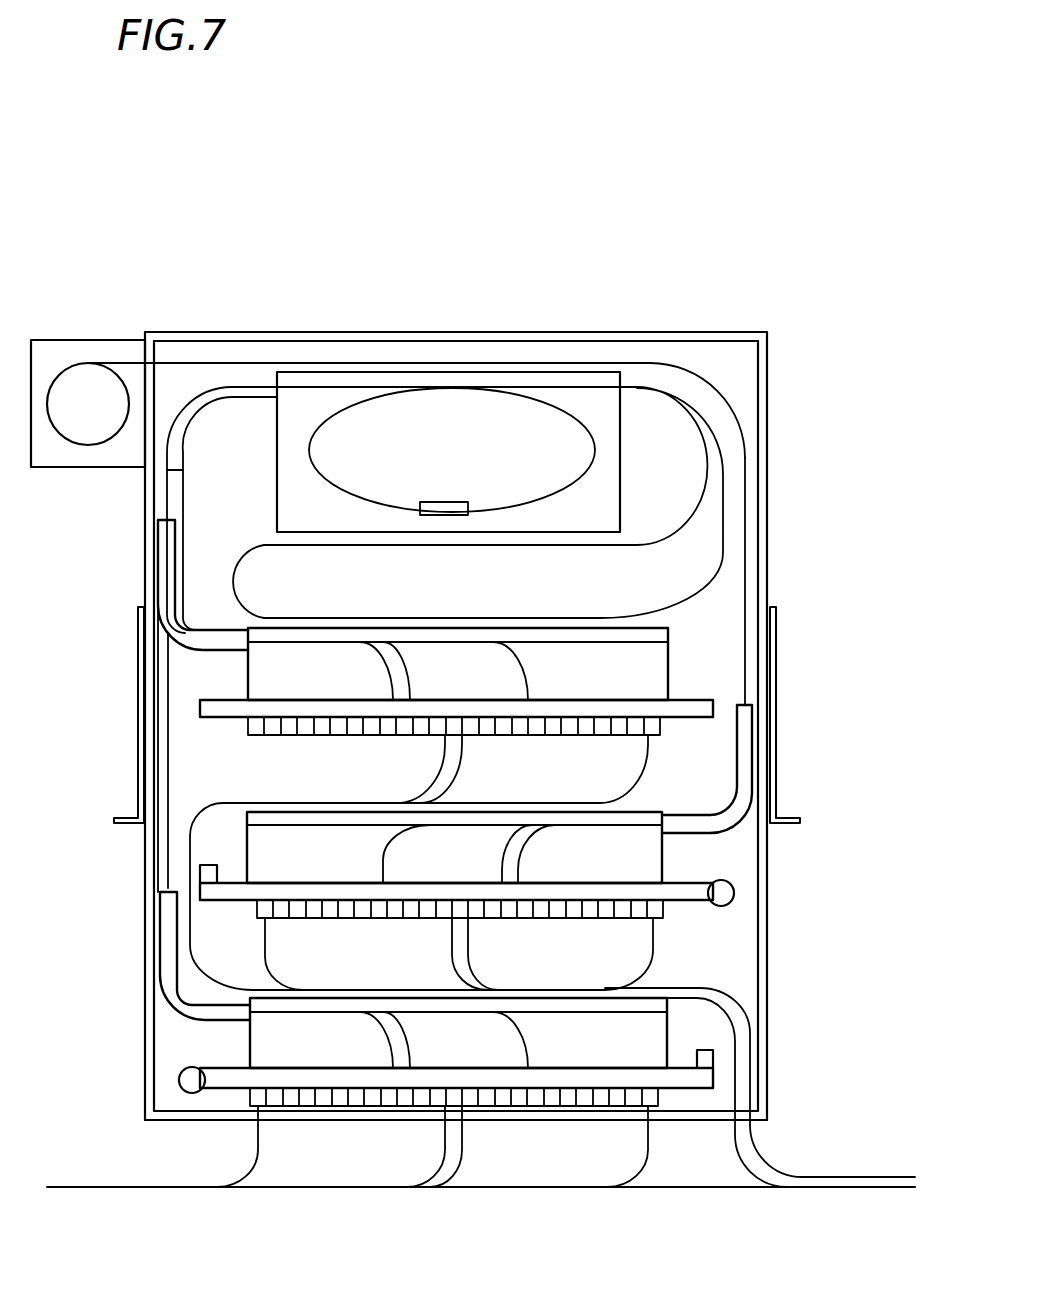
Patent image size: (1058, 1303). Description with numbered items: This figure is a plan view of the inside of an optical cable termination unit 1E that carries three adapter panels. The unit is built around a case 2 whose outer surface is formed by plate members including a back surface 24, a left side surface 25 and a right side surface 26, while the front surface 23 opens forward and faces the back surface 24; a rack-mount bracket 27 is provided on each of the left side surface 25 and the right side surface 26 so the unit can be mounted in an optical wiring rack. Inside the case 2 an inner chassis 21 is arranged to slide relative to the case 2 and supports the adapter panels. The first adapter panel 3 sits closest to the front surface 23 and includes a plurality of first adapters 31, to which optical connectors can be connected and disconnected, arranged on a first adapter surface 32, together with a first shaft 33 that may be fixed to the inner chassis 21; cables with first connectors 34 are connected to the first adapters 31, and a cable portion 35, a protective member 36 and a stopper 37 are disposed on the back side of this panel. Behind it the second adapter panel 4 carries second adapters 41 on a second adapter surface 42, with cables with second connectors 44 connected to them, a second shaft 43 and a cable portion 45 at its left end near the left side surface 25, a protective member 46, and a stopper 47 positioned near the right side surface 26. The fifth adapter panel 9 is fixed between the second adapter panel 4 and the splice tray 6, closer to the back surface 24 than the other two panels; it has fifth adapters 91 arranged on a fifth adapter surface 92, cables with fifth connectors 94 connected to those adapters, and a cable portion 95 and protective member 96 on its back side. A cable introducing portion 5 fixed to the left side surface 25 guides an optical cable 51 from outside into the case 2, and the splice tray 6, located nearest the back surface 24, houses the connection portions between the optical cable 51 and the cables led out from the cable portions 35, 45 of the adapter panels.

The termination unit 1E is at (798, 282).
The case 2 is at (661, 311).
The inner chassis 21 is at (547, 341).
The front surface 23 is at (193, 1120).
The back surface 24 is at (461, 332).
The left side surface 25 is at (145, 550).
The right side surface 26 is at (768, 550).
The rack-mount bracket 27 is at (115, 816).
The first adapter panel 3 is at (690, 1013).
The first adapters 31 is at (615, 1106).
The first adapter surface 32 is at (692, 1090).
The first shaft 33 is at (185, 1080).
The cables with first connectors 34 is at (530, 1045).
The cable portion 35 is at (170, 822).
The protective member 36 is at (166, 977).
The stopper 37 is at (713, 1058).
The second adapter panel 4 is at (645, 807).
The second adapters 41 is at (300, 918).
The second adapter surface 42 is at (233, 905).
The second shaft 43 is at (735, 893).
The cables with second connectors 44 is at (532, 855).
The cable portion 45 is at (745, 632).
The protective member 46 is at (745, 752).
The stopper 47 is at (215, 865).
The cable introducing portion 5 is at (88, 340).
The optical cable 51 is at (243, 360).
The splice tray 6 is at (620, 466).
The fifth adapter panel 9 is at (683, 667).
The fifth adapters 91 is at (288, 736).
The fifth adapter surface 92 is at (233, 718).
The cables with fifth connectors 94 is at (530, 668).
The cable portion 95 is at (176, 470).
The protective member 96 is at (212, 640).